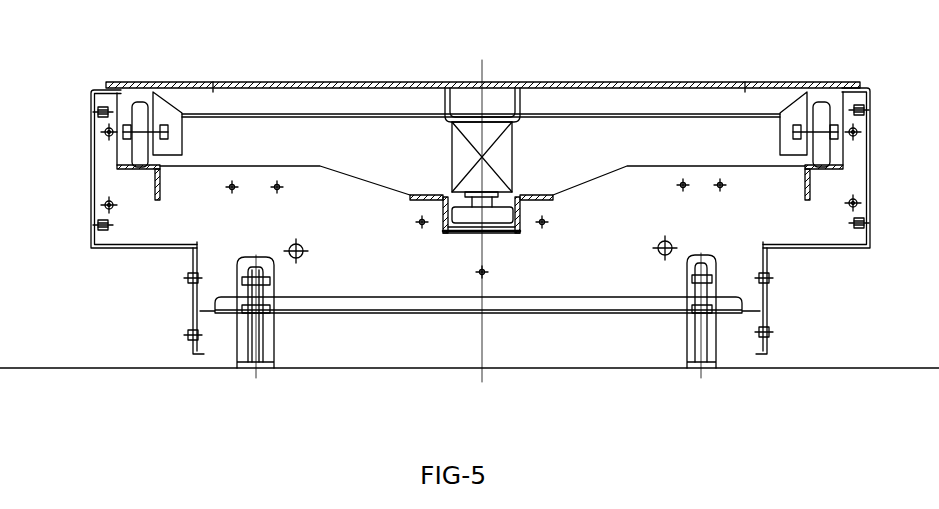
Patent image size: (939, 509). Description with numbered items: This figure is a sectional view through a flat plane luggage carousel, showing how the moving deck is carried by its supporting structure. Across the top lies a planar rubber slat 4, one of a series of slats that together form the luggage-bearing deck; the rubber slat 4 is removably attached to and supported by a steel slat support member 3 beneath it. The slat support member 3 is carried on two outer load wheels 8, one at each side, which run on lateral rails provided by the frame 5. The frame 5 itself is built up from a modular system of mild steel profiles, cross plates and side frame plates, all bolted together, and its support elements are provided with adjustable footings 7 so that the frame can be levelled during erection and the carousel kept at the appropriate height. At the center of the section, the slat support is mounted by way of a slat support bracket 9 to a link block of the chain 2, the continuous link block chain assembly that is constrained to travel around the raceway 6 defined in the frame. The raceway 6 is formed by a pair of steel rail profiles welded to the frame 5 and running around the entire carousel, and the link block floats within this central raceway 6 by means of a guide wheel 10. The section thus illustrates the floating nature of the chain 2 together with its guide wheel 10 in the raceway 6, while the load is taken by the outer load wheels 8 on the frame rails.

The chain 2 is at (523, 160).
The slat support member 3 is at (343, 121).
The rubber slat 4 is at (379, 75).
The frame 5 is at (725, 231).
The raceway 6 is at (528, 239).
The adjustable footing 7 is at (713, 368).
The outer load wheel 8 is at (132, 149).
The slat support bracket 9 is at (528, 126).
The guide wheel 10 is at (457, 235).